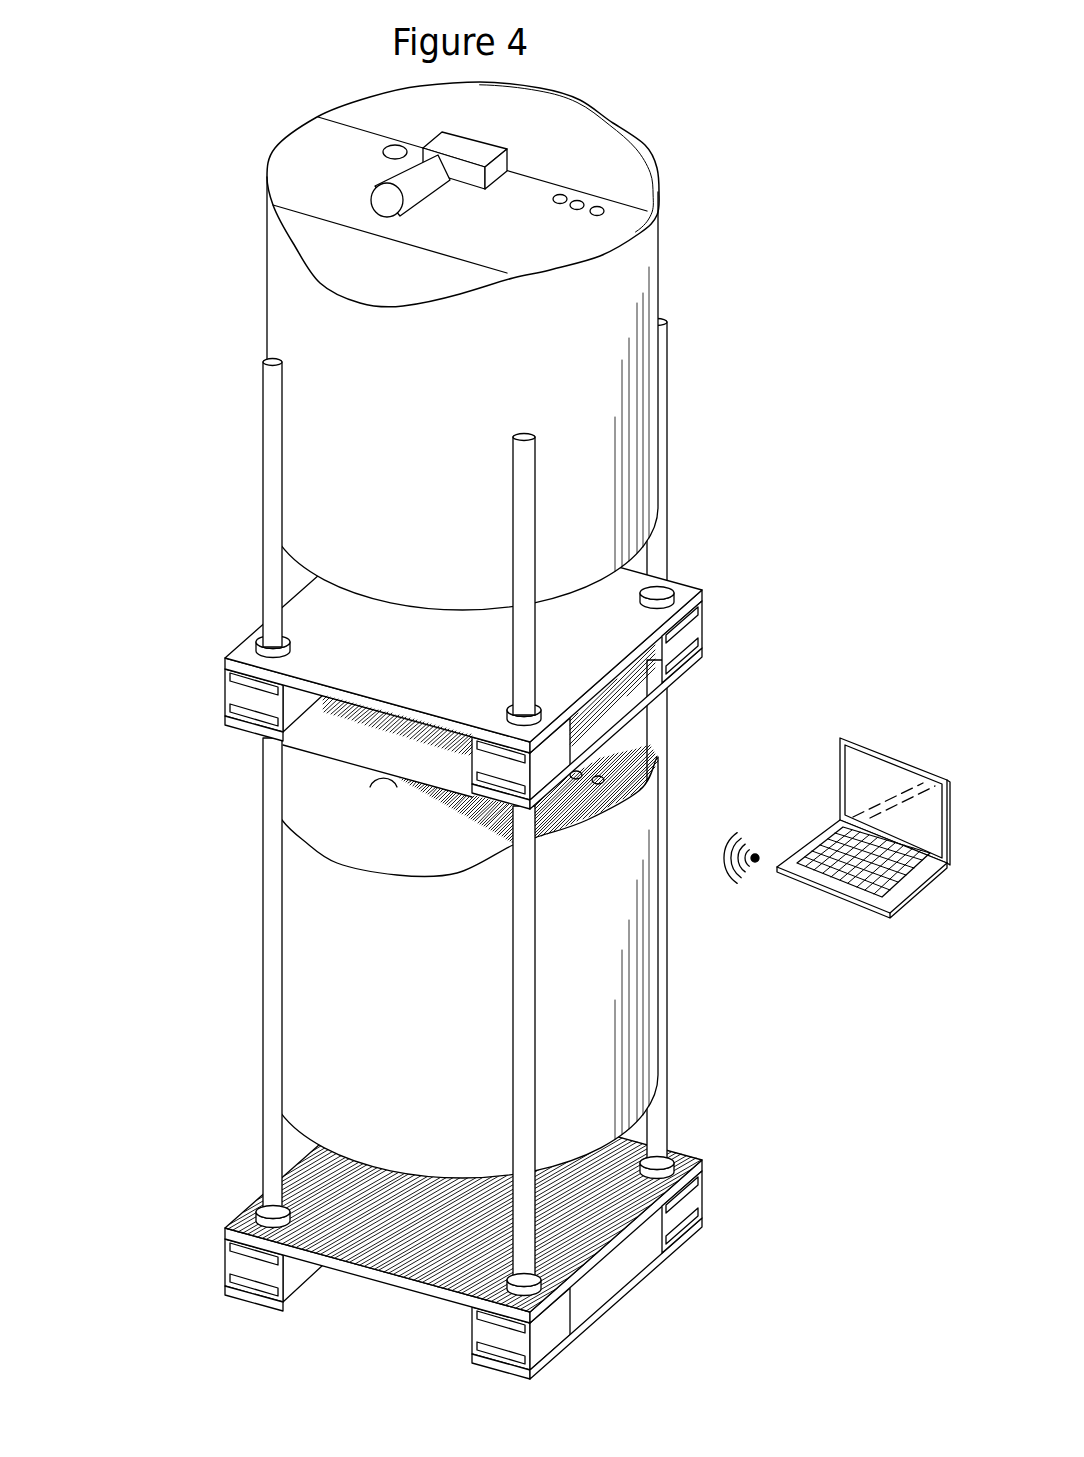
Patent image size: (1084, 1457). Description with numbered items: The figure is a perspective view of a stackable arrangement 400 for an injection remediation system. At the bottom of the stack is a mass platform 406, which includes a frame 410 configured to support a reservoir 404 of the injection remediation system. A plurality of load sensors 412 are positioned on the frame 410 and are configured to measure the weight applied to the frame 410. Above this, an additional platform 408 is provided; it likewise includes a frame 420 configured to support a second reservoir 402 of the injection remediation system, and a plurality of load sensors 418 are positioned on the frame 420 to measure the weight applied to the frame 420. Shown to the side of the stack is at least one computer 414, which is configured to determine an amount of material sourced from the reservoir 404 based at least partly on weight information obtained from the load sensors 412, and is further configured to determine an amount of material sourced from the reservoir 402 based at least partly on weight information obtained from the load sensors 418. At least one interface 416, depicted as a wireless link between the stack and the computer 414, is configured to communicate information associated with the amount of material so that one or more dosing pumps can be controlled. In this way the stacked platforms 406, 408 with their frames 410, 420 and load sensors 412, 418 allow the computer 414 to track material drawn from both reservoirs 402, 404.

The stackable arrangement 400 is at (780, 138).
The reservoir 402 is at (310, 328).
The reservoir 404 is at (352, 928).
The mass platform 406 is at (212, 1262).
The additional platform 408 is at (212, 677).
The frame 410 is at (618, 1218).
The load sensors 412 is at (723, 1200).
The computer 414 is at (882, 913).
The interface 416 is at (757, 866).
The load sensors 418 is at (714, 602).
The frame 420 is at (350, 675).